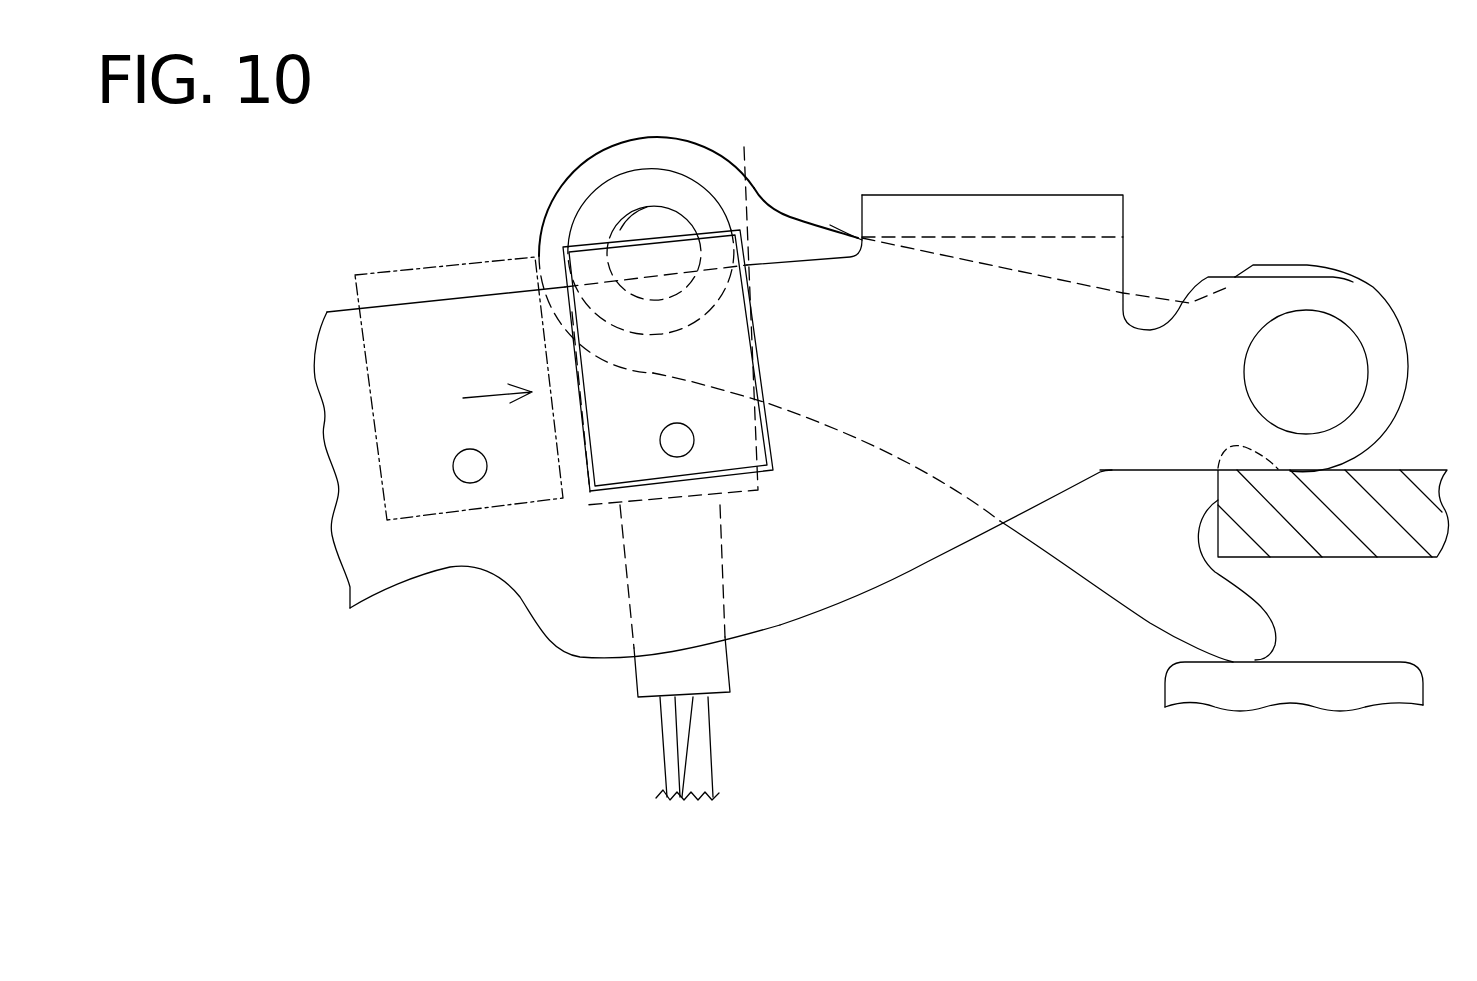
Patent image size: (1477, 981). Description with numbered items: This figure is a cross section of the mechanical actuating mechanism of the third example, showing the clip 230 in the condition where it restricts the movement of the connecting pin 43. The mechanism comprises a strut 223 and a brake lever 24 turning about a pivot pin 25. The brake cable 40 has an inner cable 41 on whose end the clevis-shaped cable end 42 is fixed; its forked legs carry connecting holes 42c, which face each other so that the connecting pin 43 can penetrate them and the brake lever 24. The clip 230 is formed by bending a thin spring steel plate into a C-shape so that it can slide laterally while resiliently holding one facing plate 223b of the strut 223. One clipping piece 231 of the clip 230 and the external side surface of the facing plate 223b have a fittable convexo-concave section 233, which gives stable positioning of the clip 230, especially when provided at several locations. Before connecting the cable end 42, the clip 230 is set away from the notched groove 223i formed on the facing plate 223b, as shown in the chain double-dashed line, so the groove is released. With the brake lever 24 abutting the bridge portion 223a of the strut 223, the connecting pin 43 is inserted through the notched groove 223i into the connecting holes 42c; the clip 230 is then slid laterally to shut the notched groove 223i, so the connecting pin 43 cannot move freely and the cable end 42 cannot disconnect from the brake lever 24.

The brake lever 24 is at (830, 228).
The pivot pin 25 is at (1362, 348).
The brake cable 40 is at (716, 755).
The inner cable 41 is at (665, 742).
The cable end 42 is at (593, 241).
The connecting holes 42c is at (674, 220).
The connecting pin 43 is at (647, 205).
The strut 223 is at (787, 263).
The bridge portion 223a is at (1003, 195).
The facing plate 223b is at (837, 610).
The notched groove 223i is at (675, 307).
The clip 230 is at (453, 263).
The clipping piece 231 is at (762, 424).
The convexo-concave section 233 is at (677, 457).